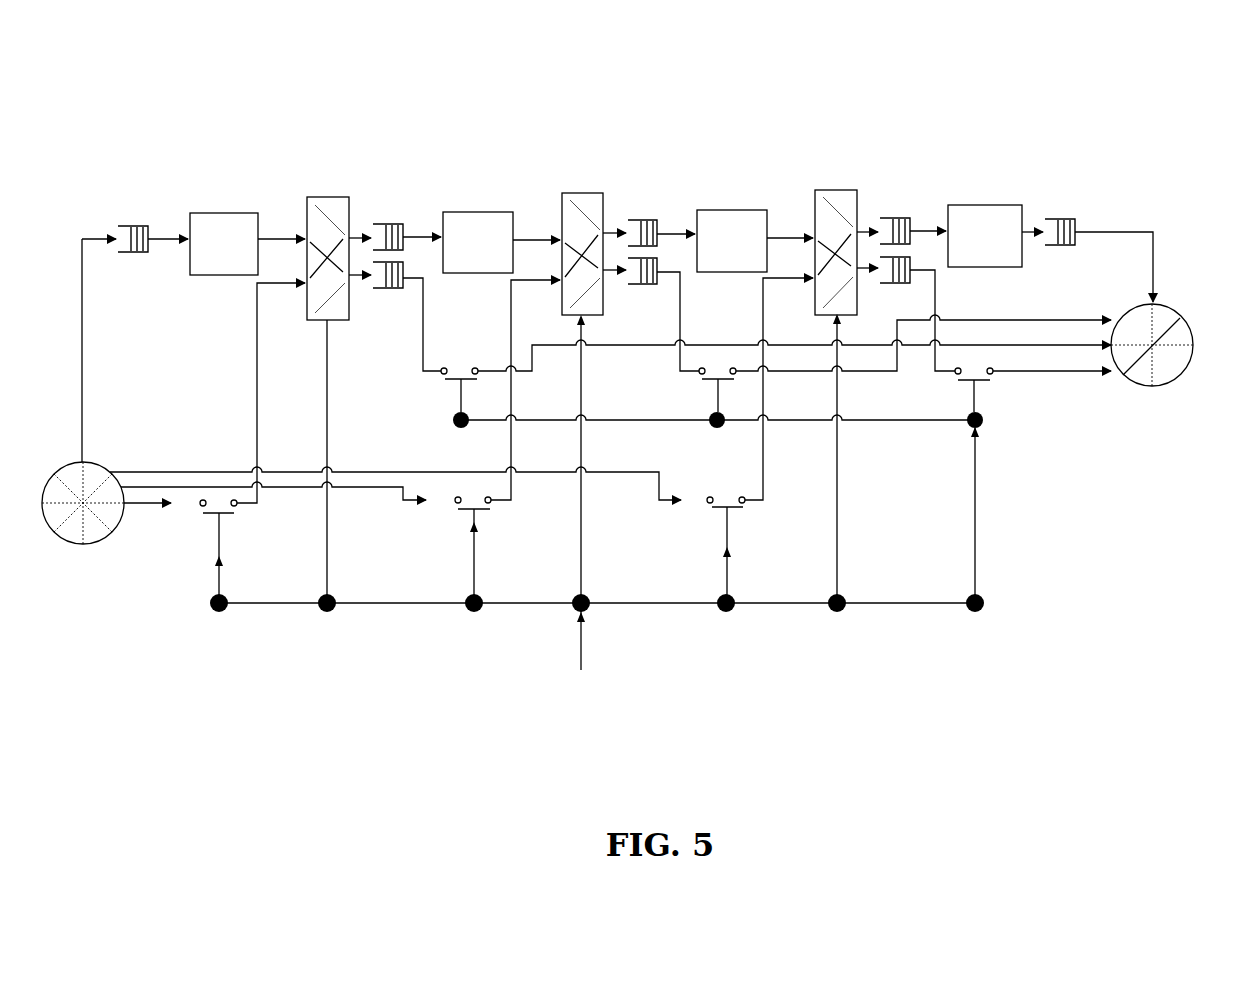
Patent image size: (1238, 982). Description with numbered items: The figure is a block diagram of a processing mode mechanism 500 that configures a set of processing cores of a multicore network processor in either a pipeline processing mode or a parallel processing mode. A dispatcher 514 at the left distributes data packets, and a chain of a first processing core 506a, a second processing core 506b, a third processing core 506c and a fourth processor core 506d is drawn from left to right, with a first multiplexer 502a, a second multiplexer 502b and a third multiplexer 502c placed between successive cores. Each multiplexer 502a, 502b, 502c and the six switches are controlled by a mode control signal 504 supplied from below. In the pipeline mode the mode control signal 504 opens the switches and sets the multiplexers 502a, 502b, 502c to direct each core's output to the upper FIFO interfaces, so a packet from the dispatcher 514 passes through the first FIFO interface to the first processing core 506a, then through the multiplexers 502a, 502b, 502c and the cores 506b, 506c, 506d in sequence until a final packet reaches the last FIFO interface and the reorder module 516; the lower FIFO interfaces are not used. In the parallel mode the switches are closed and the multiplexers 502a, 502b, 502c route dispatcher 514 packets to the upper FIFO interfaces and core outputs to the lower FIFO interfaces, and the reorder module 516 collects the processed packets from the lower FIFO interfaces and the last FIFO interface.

The processing mode mechanism 500 is at (86, 110).
The first multiplexer 502a is at (313, 198).
The second multiplexer 502b is at (566, 195).
The third multiplexer 502c is at (820, 191).
The mode control signal 504 is at (580, 650).
The first processing core 506a is at (227, 213).
The second processing core 506b is at (483, 212).
The third processing core 506c is at (739, 210).
The fourth processor core 506d is at (989, 205).
The dispatcher 514 is at (70, 546).
The reorder module 516 is at (1192, 341).